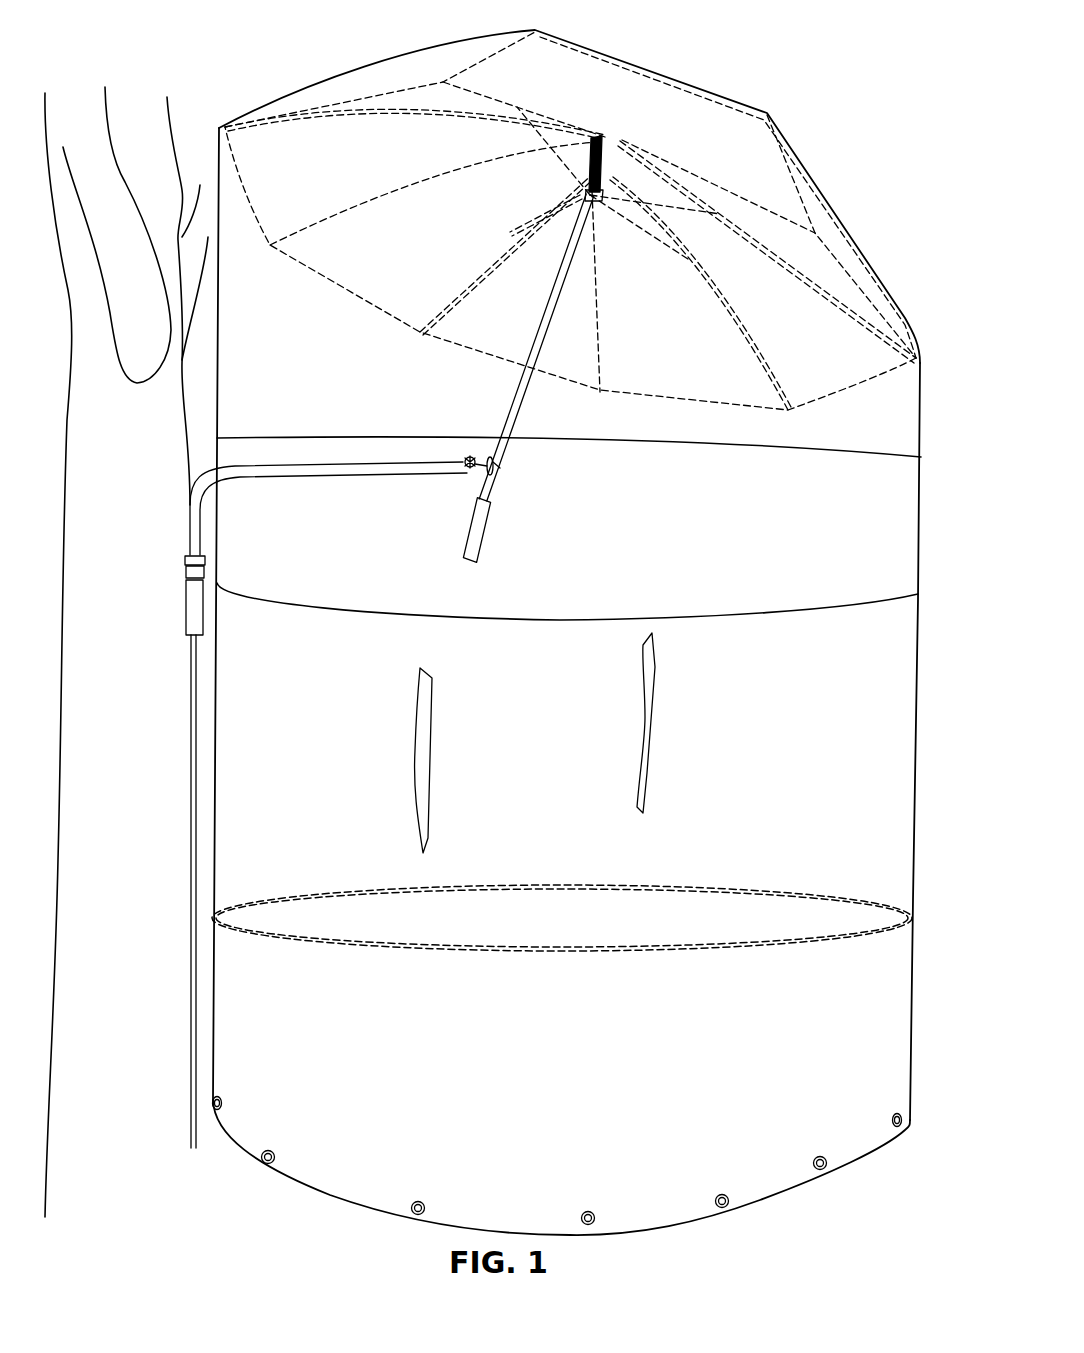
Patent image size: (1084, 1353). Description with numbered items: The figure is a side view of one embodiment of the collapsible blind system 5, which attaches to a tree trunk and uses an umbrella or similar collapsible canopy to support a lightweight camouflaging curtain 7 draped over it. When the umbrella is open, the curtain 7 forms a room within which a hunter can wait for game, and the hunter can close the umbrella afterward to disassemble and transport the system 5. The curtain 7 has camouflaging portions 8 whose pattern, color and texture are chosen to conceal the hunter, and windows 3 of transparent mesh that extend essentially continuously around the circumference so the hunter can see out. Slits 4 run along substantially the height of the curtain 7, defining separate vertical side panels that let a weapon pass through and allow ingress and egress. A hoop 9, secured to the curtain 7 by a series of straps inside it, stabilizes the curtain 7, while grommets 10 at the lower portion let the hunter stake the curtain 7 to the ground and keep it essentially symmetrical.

The windows 3 is at (880, 537).
The slits 4 is at (427, 763).
The collapsible blind system 5 is at (913, 133).
The camouflaging curtain 7 is at (922, 420).
The camouflaging portions 8 is at (270, 337).
The hoop 9 is at (360, 945).
The grommets 10 is at (415, 1200).